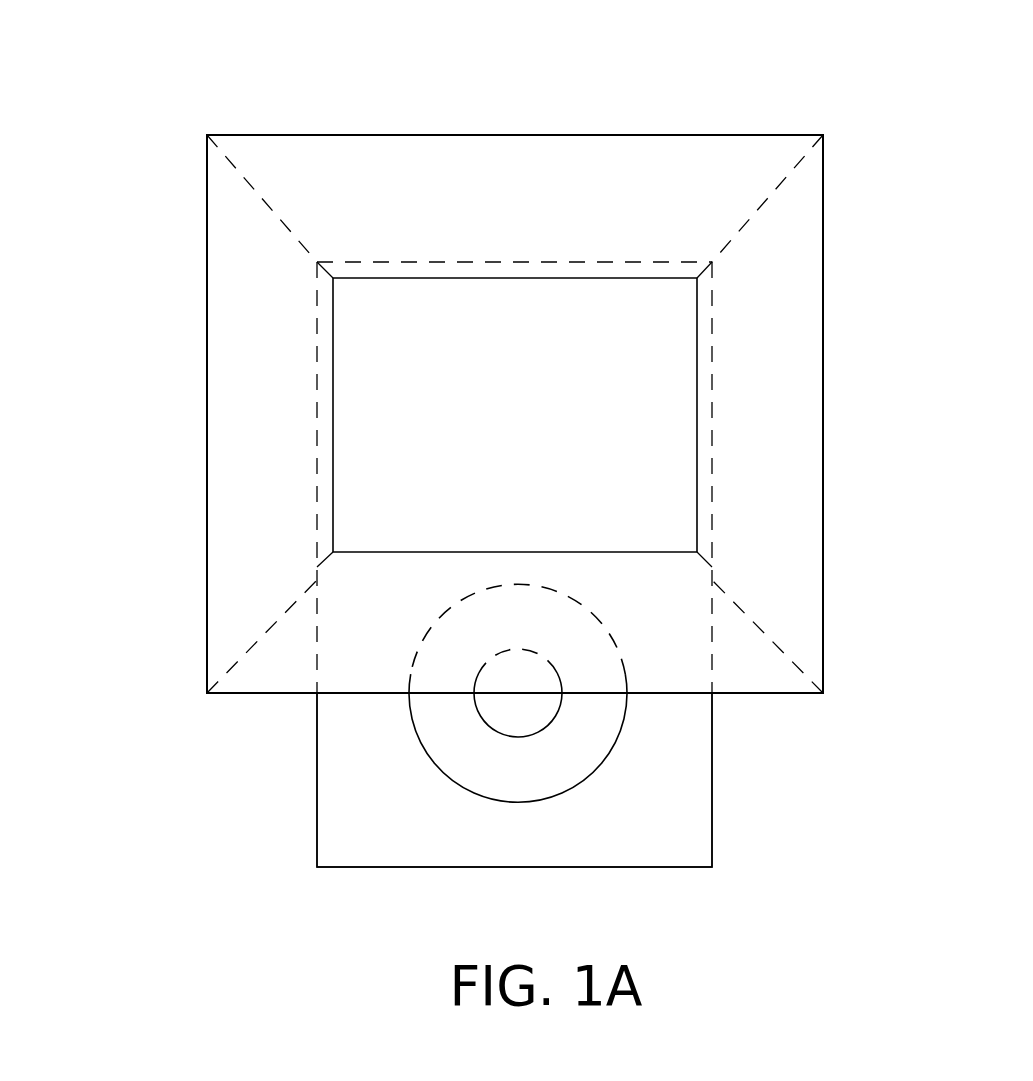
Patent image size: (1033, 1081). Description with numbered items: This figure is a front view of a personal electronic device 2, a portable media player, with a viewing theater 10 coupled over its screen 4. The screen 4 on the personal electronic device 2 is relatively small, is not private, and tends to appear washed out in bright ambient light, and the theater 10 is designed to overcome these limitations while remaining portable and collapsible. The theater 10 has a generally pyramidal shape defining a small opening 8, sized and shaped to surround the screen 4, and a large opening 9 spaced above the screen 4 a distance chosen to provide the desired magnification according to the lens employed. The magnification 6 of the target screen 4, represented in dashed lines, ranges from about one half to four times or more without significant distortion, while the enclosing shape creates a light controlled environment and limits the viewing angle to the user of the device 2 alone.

The personal electronic device 2 is at (744, 827).
The screen 4 is at (657, 425).
The magnification 6 is at (755, 212).
The small opening 8 is at (337, 370).
The large opening 9 is at (210, 583).
The viewing theater 10 is at (846, 111).